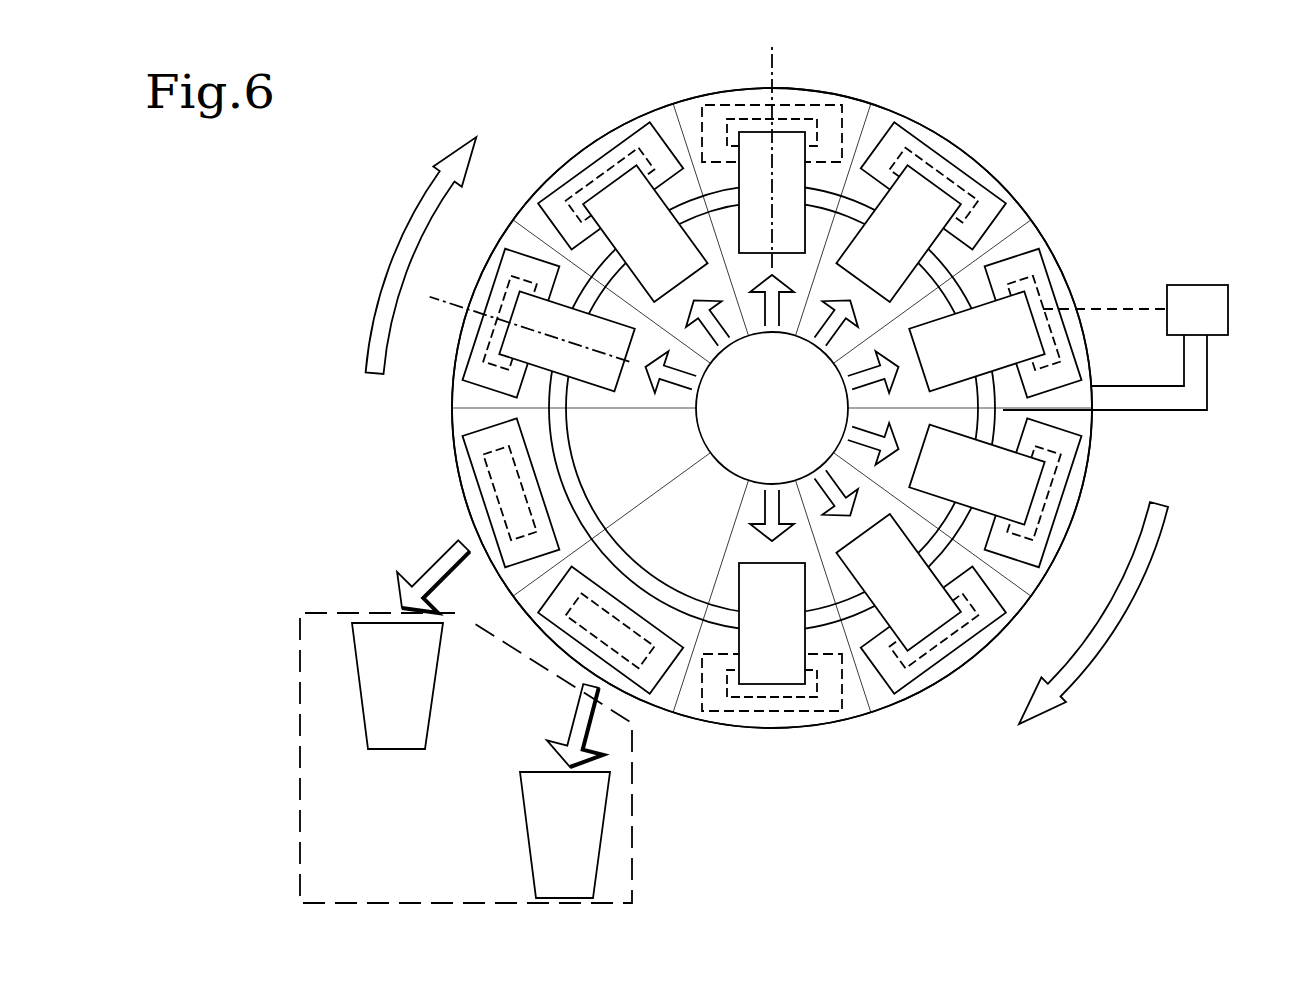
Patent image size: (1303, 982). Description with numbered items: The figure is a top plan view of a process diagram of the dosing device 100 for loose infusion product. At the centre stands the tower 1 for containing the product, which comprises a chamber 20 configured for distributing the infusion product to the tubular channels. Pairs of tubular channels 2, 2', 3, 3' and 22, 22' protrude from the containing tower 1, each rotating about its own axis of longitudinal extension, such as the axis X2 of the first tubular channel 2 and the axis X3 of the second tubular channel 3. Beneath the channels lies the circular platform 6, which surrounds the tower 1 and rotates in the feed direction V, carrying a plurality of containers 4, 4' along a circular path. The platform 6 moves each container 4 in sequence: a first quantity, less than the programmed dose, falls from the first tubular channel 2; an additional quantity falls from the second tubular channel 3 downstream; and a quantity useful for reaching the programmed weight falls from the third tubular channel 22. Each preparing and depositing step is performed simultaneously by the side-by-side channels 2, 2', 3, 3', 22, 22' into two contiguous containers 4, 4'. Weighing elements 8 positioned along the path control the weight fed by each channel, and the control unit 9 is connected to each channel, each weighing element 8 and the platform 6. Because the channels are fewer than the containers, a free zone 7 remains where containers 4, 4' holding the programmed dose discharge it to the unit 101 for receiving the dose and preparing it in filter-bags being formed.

The tower 1 is at (603, 307).
The first tubular channel 2 is at (639, 408).
The first tubular channel 2' is at (613, 131).
The second tubular channel 3 is at (813, 150).
The second tubular channel 3' is at (927, 191).
The container 4 is at (772, 419).
The container 4' is at (698, 379).
The platform 6 is at (866, 705).
The zone for discharging 7 is at (485, 592).
The weighing element 8 is at (967, 183).
The control unit 9 is at (1211, 323).
The chamber 20 is at (905, 497).
The third tubular channel 22 is at (993, 284).
The third tubular channel 22' is at (1085, 469).
The dosing device 100 is at (1098, 168).
The unit for receiving the dose 101 is at (632, 847).
The feed direction V is at (397, 242).
The second axis X2 is at (447, 305).
The second axis X3 is at (773, 70).